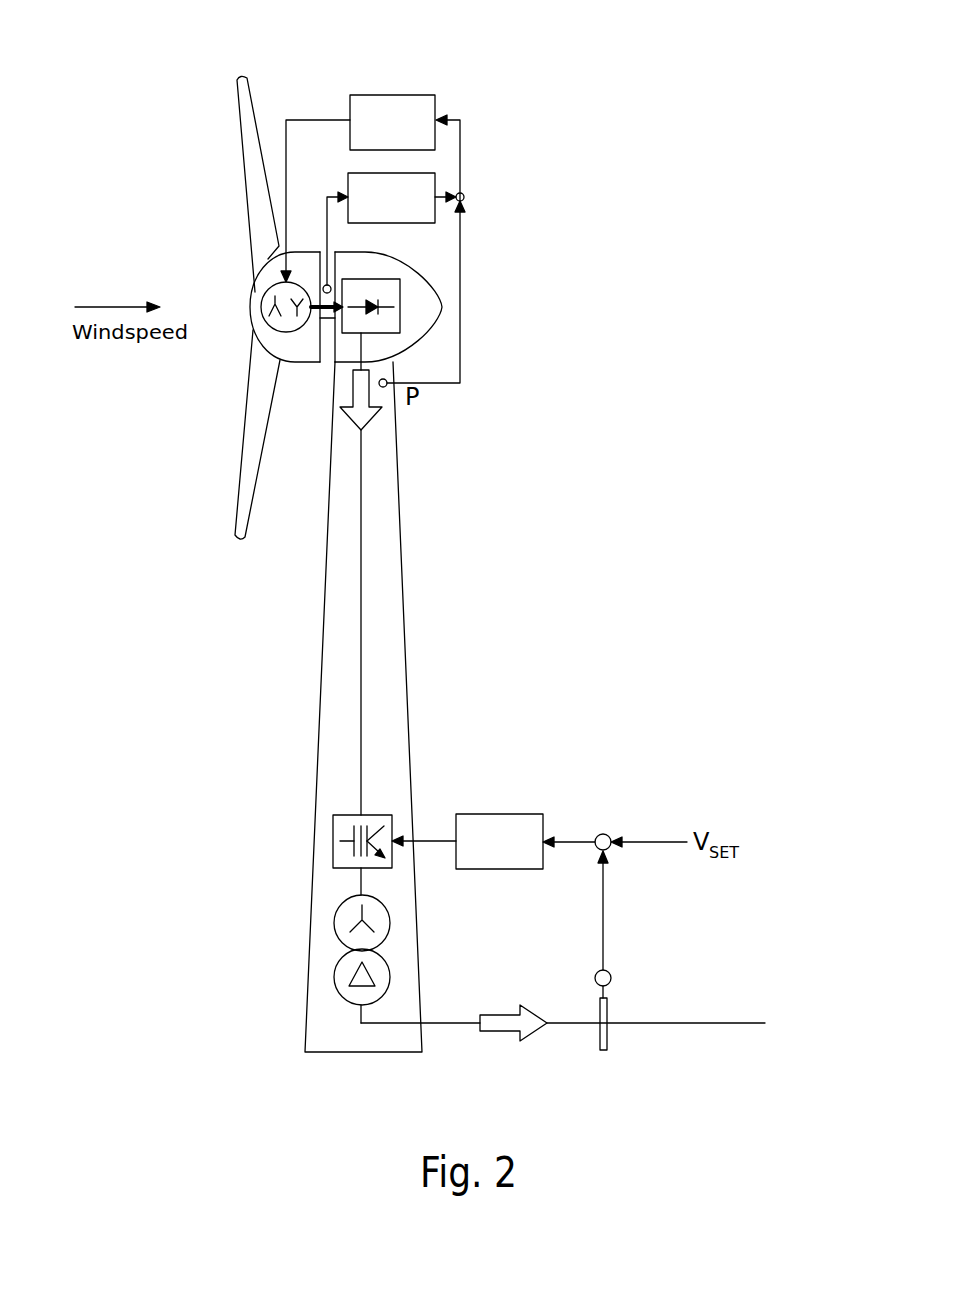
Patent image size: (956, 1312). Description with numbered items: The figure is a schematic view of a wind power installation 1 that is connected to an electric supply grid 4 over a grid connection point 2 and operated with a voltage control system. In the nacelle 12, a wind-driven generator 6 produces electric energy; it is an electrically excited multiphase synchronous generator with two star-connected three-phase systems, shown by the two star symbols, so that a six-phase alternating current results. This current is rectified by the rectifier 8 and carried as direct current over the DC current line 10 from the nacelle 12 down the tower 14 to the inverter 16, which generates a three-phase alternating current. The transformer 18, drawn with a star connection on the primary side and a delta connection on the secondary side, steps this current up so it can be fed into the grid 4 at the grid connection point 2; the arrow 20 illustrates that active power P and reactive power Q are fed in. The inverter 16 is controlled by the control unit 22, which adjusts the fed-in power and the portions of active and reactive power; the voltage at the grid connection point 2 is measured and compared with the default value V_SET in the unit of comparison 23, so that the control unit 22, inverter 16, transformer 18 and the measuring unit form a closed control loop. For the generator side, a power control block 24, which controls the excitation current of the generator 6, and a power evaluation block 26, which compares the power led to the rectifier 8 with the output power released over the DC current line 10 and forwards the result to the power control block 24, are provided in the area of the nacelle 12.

The wind power installation 1 is at (433, 707).
The grid connection point 2 is at (599, 1036).
The electric supply grid 4 is at (682, 1025).
The generator 6 is at (262, 299).
The rectifier 8 is at (393, 290).
The DC current line 10 is at (363, 566).
The nacelle 12 is at (302, 363).
The tower 14 is at (324, 603).
The inverter 16 is at (333, 835).
The transformer 18 is at (334, 977).
The arrow 20 is at (490, 1032).
The control unit 22 is at (512, 814).
The unit of comparison 23 is at (603, 834).
The power control block 24 is at (436, 103).
The power evaluation block 26 is at (348, 180).